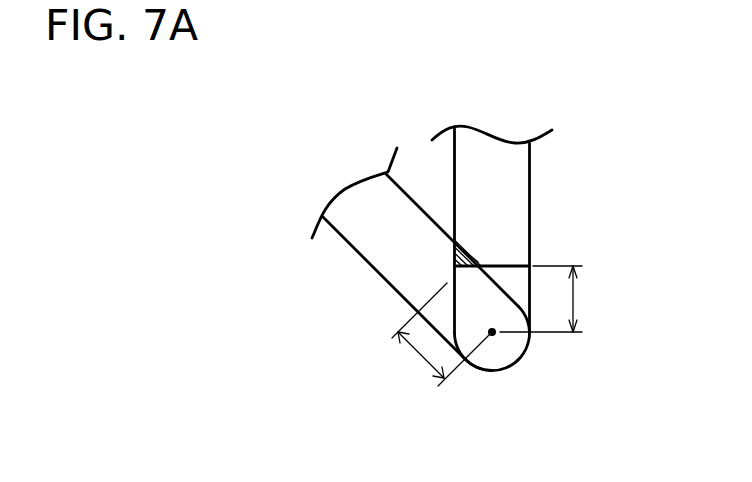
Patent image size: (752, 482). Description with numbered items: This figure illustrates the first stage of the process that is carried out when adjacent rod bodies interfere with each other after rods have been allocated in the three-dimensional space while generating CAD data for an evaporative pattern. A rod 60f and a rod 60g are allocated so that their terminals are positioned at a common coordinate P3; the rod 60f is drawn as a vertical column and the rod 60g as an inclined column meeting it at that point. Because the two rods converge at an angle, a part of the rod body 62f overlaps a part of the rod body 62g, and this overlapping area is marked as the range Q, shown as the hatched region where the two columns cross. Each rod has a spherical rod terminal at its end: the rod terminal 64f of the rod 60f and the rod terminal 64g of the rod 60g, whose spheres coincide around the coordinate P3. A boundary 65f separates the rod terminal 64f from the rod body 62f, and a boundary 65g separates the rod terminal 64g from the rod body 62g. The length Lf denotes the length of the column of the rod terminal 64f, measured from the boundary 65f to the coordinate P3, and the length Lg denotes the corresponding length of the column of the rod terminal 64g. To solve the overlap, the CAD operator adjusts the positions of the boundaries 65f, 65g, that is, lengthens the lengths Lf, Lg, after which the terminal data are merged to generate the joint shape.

The rod 60f is at (557, 248).
The rod body 62f is at (512, 191).
The boundary 65f is at (497, 263).
The rod terminal 64f is at (513, 278).
The rod 60g is at (368, 259).
The rod body 62g is at (382, 254).
The boundary 65g is at (433, 300).
The rod terminal 64g is at (414, 322).
The range Q is at (460, 247).
The coordinate P3 is at (492, 338).
The length Lf is at (552, 299).
The length Lg is at (442, 334).